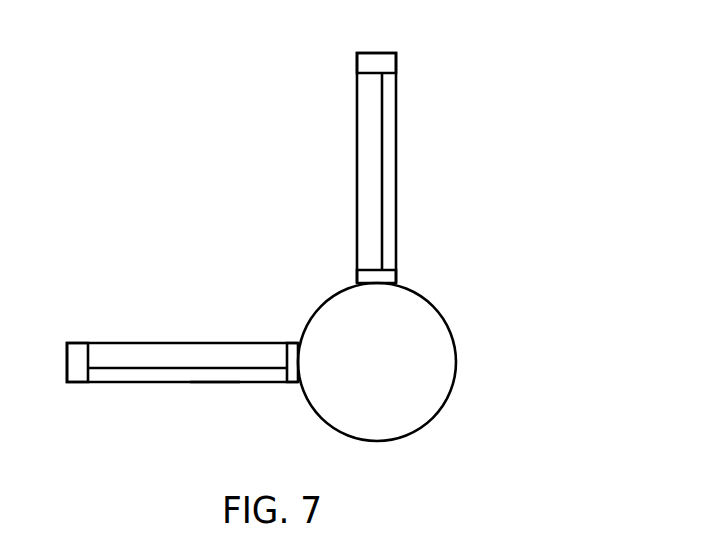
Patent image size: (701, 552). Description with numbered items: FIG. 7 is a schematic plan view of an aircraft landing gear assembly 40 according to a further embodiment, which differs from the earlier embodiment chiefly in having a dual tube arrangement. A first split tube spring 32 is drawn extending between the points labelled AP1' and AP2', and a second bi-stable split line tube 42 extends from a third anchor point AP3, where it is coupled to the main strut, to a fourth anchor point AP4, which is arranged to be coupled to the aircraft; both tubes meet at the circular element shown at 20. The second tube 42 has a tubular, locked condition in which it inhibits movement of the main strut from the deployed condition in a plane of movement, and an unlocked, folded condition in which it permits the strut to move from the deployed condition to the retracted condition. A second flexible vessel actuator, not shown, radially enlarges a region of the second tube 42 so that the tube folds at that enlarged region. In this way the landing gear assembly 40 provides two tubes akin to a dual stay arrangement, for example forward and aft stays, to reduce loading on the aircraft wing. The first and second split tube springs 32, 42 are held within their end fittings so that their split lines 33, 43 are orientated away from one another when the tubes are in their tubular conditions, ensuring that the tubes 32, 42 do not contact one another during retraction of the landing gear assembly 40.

The hub / central body 20 is at (443, 403).
The first split tube spring 32 is at (396, 140).
The split line 33 is at (382, 167).
The landing gear assembly 40 is at (292, 241).
The second bi-stable split line tube 42 is at (228, 343).
The split line 43 is at (125, 368).
The attachment point AP1' is at (419, 266).
The attachment point AP2' is at (421, 48).
The third anchor point AP3 is at (290, 382).
The fourth anchor point AP4 is at (78, 382).